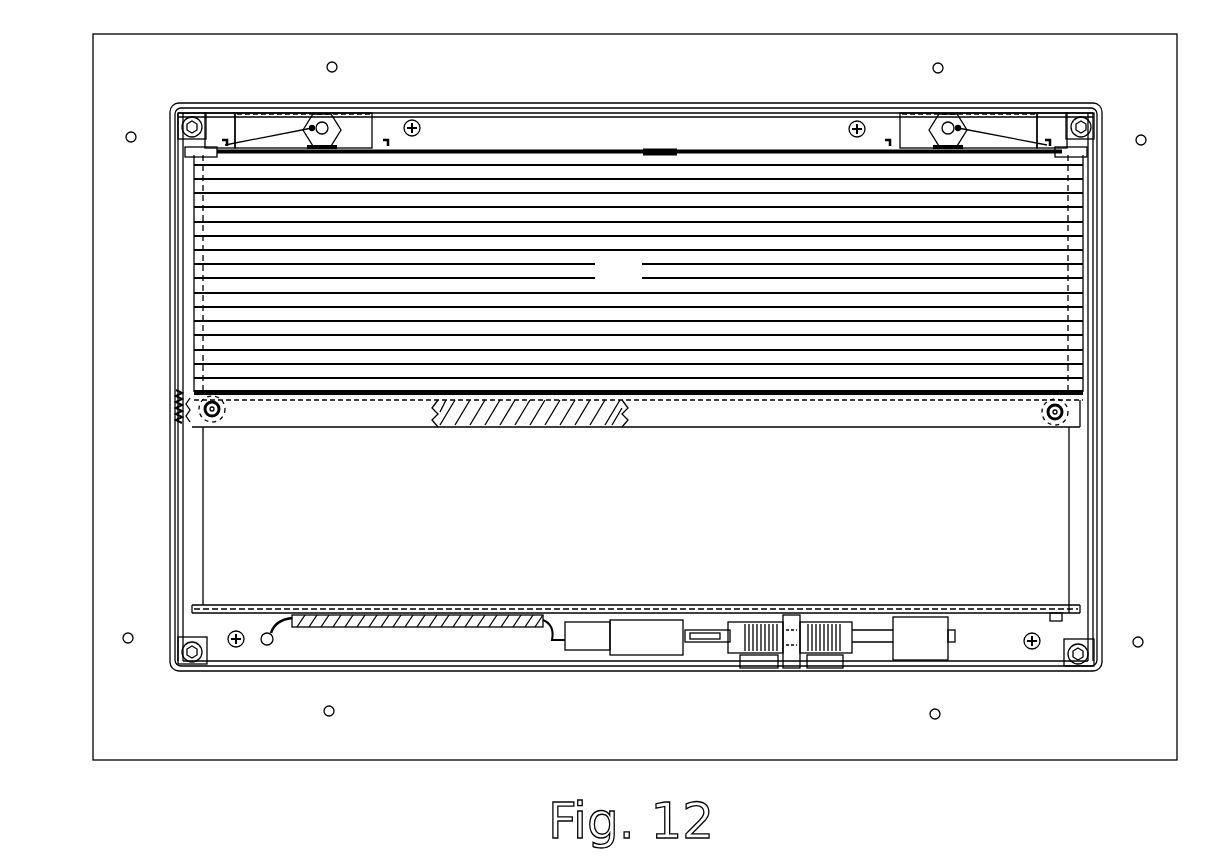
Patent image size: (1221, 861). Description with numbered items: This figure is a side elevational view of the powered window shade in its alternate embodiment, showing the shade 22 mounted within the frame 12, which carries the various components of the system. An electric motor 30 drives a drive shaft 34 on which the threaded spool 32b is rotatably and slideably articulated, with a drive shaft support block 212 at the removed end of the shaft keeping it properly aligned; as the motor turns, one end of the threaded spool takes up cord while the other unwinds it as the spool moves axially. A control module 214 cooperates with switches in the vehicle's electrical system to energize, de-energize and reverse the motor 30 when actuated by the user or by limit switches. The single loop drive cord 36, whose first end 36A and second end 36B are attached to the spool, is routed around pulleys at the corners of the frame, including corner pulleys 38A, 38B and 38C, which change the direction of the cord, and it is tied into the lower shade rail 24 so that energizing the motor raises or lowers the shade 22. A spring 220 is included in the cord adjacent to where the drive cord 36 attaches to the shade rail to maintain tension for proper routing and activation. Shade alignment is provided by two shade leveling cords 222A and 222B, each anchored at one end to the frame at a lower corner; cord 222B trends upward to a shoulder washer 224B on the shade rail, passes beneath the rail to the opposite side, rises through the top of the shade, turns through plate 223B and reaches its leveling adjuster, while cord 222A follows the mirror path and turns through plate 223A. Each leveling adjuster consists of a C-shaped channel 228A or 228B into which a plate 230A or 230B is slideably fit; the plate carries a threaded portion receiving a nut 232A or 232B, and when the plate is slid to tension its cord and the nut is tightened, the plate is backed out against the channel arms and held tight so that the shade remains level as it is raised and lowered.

The frame 12 is at (1143, 314).
The shade 22 is at (631, 286).
The lower shade rail 24 is at (717, 428).
The electric motor 30 is at (657, 649).
The threaded spool 32b is at (853, 652).
The drive shaft 34 is at (957, 638).
The drive cord 36 is at (181, 505).
The first end of drive cord 36A is at (755, 623).
The second end of drive cord 36B is at (850, 608).
The corner pulley 38A is at (1100, 121).
The corner pulley 38B is at (181, 119).
The corner pulley 38C is at (180, 667).
The drive shaft support block 212 is at (940, 651).
The control module 214 is at (385, 628).
The spring 220 is at (178, 408).
The shade leveling cord 222A is at (1068, 550).
The shade leveling cord 222B is at (204, 548).
The plate 223A is at (190, 152).
The plate 223B is at (1087, 153).
The shoulder washer 224B is at (240, 421).
The C-shaped channel 228A is at (272, 108).
The C-shaped channel 228B is at (1005, 112).
The plate 230A is at (340, 130).
The plate 230B is at (930, 130).
The nut 232A is at (310, 126).
The nut 232B is at (960, 126).